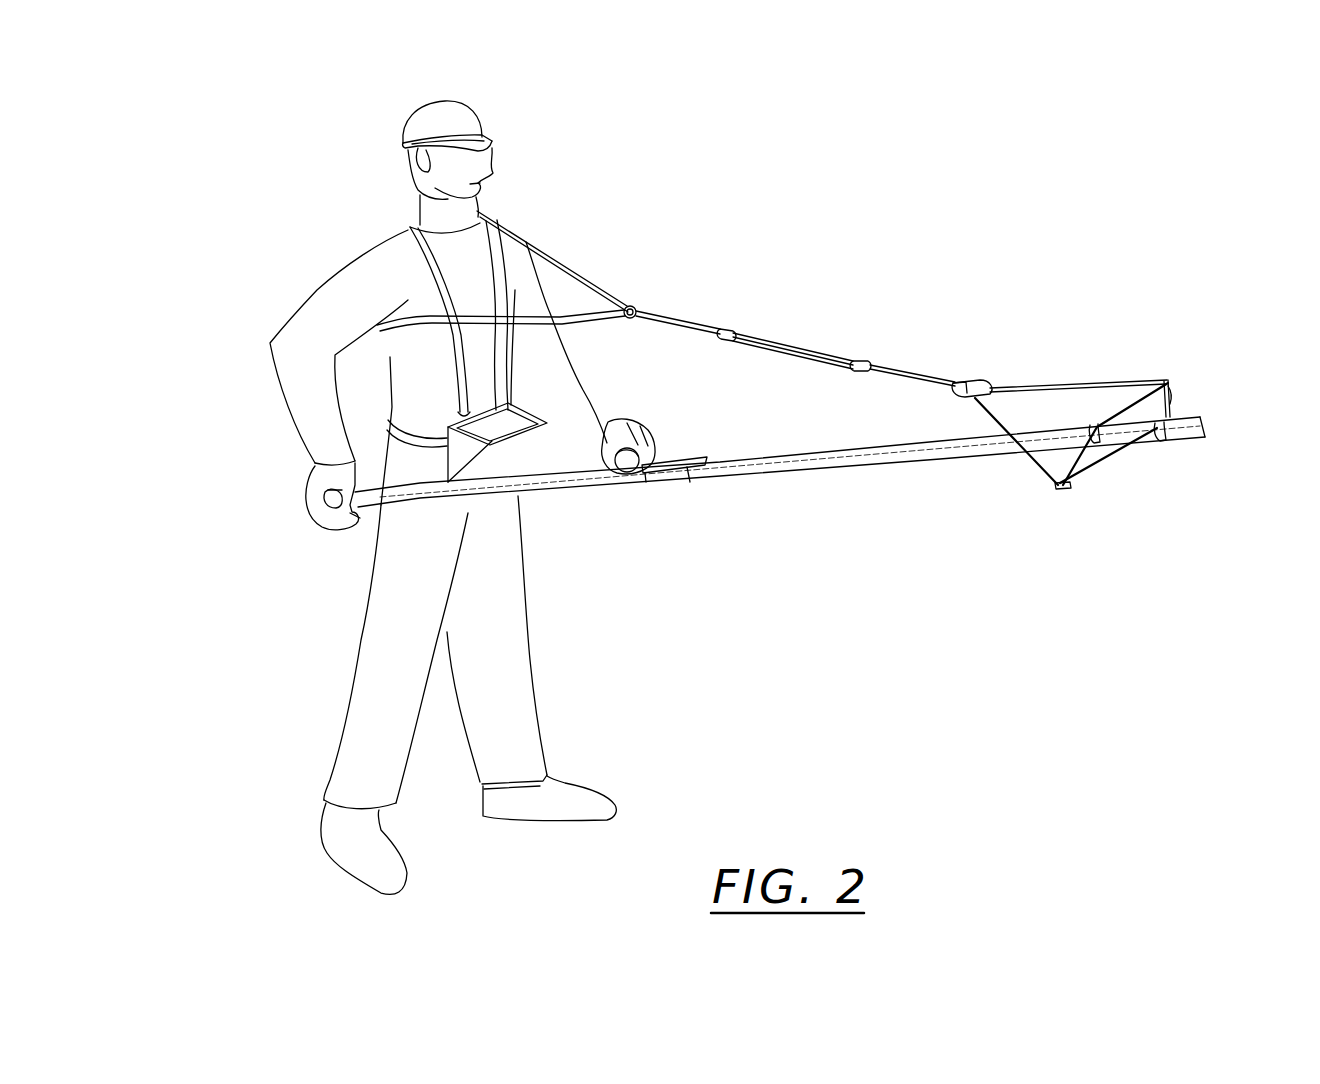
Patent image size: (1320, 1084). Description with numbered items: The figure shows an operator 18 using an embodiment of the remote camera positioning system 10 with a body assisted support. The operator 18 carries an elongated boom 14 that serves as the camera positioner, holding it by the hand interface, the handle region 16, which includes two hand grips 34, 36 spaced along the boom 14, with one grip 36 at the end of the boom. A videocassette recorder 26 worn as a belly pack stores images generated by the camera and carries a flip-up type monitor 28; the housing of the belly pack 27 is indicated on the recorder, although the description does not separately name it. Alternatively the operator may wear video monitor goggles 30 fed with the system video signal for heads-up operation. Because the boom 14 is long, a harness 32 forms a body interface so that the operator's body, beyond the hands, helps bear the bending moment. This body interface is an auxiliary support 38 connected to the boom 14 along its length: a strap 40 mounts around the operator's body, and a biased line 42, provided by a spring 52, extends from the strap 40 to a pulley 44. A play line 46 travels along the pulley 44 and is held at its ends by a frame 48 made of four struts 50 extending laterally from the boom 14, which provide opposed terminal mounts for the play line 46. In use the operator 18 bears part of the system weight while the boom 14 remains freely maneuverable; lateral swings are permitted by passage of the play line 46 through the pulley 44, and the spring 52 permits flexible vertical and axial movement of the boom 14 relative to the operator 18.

The camera positioning system 10 is at (1037, 235).
The boom 14 is at (833, 467).
The handle region 16 is at (607, 512).
The operator 18 is at (318, 317).
The videocassette recorder 26 is at (448, 482).
The housing side wall 27 is at (520, 456).
The flip-up type monitor 28 is at (506, 410).
The video monitor goggles 30 is at (493, 141).
The harness 32 is at (740, 318).
The hand grip 34 is at (651, 447).
The hand grip 36 is at (323, 511).
The auxiliary support 38 is at (1180, 355).
The strap 40 is at (557, 257).
The biased line 42 is at (830, 330).
The pulley 44 is at (977, 383).
The play line 46 is at (1082, 378).
The frame 48 is at (1150, 460).
The struts 50 is at (1137, 400).
The spring 52 is at (760, 347).